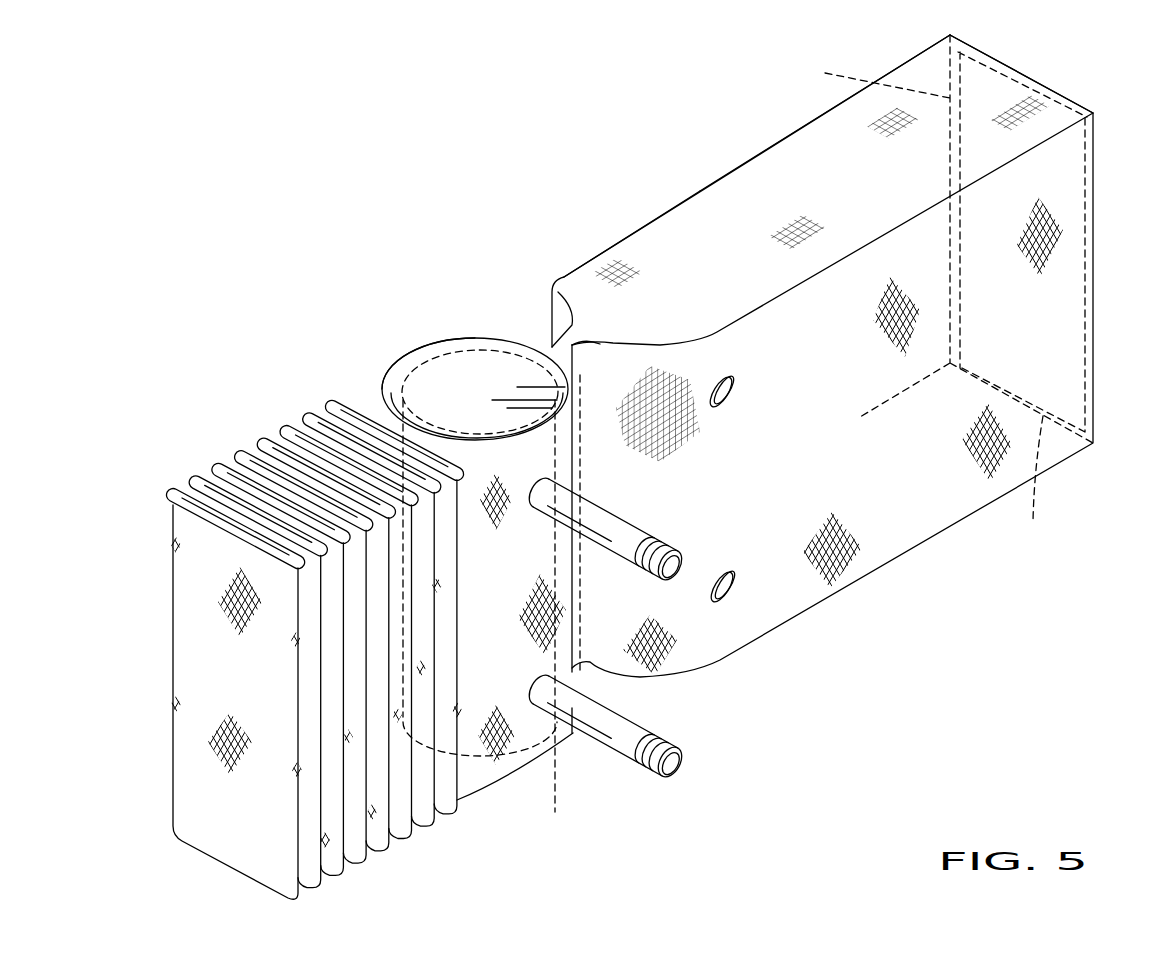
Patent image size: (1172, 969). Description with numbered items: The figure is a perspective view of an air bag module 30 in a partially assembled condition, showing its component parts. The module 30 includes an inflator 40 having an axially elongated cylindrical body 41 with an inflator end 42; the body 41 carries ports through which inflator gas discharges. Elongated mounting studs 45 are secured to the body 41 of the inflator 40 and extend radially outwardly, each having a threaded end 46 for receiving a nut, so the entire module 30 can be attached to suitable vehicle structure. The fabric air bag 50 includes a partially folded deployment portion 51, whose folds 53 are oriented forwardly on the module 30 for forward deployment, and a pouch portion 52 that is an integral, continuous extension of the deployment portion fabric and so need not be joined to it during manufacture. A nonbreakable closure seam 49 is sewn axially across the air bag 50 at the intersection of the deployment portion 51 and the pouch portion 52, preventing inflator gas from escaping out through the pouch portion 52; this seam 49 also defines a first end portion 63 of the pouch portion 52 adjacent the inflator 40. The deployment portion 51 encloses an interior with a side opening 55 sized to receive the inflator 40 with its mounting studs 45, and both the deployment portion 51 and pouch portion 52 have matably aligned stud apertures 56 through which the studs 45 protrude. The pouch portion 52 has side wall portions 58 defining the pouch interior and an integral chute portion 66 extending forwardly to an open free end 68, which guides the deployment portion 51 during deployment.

The air bag module 30 is at (400, 310).
The inflator 40 is at (493, 348).
The cylindrical body 41 is at (488, 619).
The inflator end 42 is at (459, 362).
The mounting studs 45 is at (681, 588).
The threaded end 46 is at (653, 542).
The nonbreakable closure seam 49 is at (582, 350).
The air bag 50 is at (332, 398).
The deployment portion 51 is at (379, 394).
The pouch portion 52 is at (742, 162).
The folds 53 is at (262, 452).
The side opening 55 is at (410, 357).
The stud apertures 56 is at (727, 380).
The side wall portions 58 is at (845, 123).
The first end portion 63 is at (610, 236).
The chute portion 66 is at (920, 53).
The free end 68 is at (1013, 70).